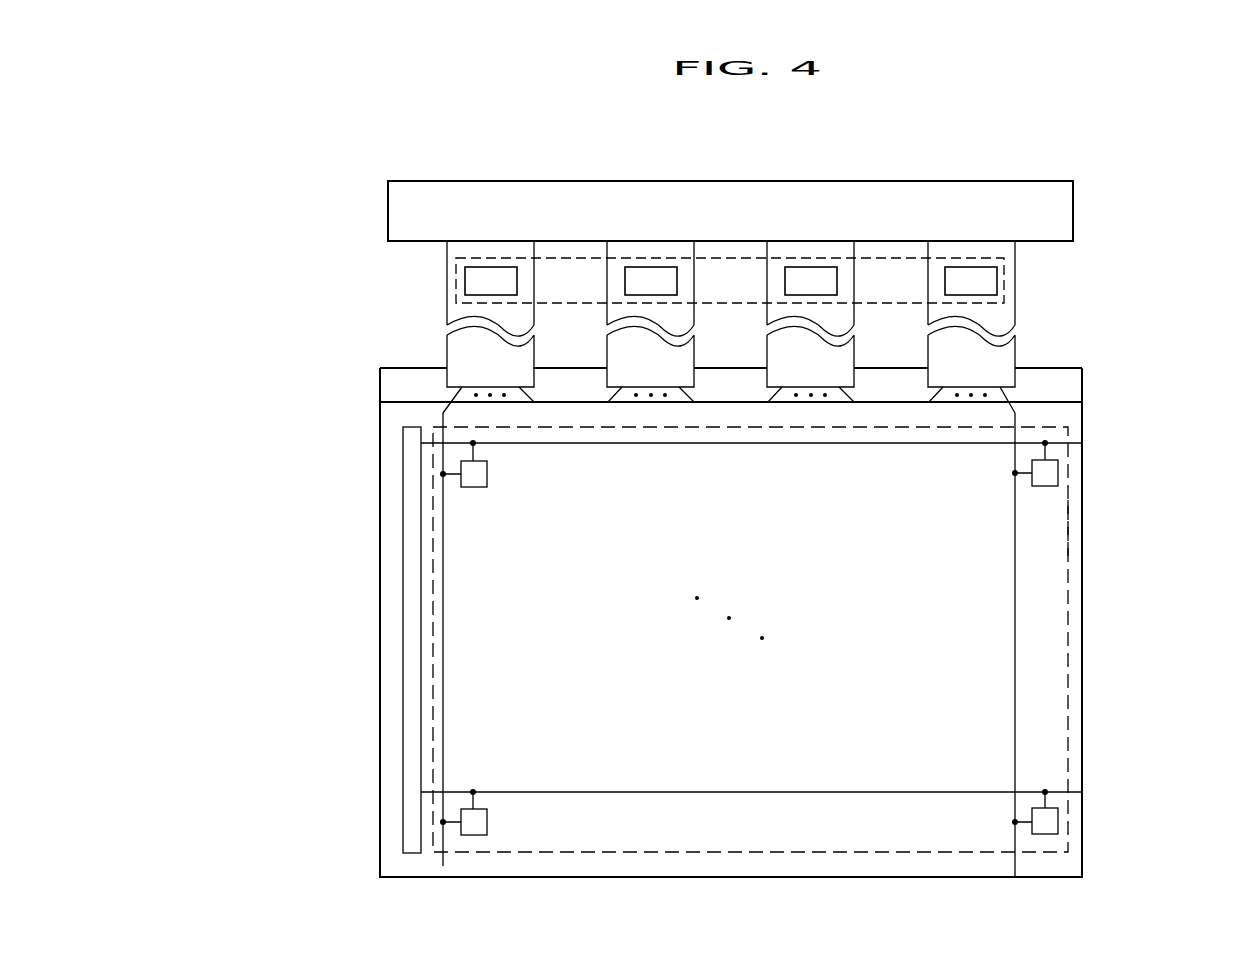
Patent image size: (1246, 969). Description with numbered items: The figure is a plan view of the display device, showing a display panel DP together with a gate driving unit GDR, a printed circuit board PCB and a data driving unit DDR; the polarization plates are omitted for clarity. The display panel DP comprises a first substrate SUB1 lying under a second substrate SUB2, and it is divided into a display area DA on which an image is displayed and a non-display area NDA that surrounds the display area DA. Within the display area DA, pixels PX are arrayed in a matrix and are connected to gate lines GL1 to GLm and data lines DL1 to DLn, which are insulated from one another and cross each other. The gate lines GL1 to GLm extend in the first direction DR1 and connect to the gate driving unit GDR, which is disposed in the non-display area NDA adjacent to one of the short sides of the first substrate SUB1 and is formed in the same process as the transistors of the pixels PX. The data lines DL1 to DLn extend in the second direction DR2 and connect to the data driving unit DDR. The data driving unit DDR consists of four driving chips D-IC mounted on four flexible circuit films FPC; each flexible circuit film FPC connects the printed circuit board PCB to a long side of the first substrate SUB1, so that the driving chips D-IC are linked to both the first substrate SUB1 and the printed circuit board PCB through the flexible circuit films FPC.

The printed circuit board PCB is at (1062, 212).
The driving chip D-IC is at (987, 263).
The data driving unit DDR is at (1004, 280).
The flexible circuit film FPC is at (1000, 318).
The first substrate SUB1 is at (1082, 385).
The second substrate SUB2 is at (1082, 470).
The display panel DP is at (1192, 377).
The pixel PX is at (487, 471).
The first gate line GL1 is at (743, 443).
The m-th gate line GLm is at (743, 790).
The first data line DL1 is at (444, 640).
The n-th data line DLn is at (1015, 639).
The gate driving unit GDR is at (410, 640).
The non-display area NDA is at (1074, 524).
The display area DA is at (1050, 586).
The first direction DR1 is at (223, 876).
The second direction DR2 is at (223, 876).